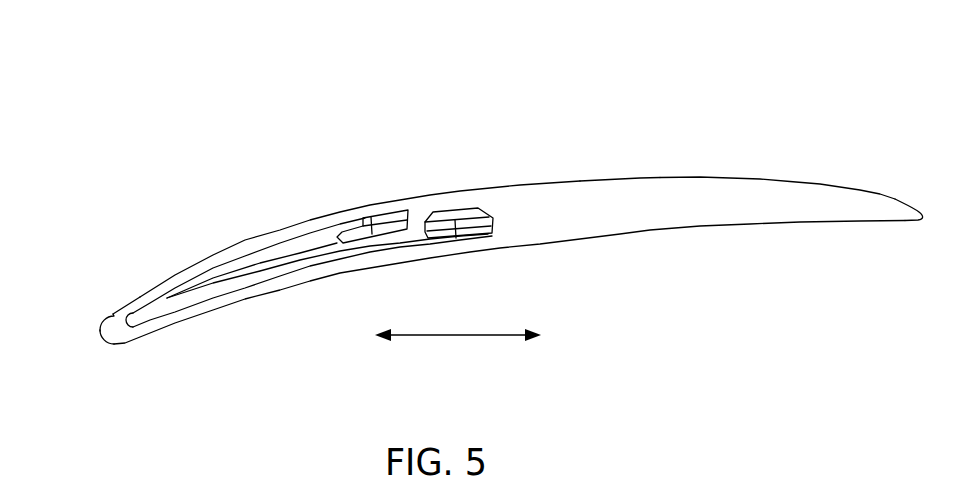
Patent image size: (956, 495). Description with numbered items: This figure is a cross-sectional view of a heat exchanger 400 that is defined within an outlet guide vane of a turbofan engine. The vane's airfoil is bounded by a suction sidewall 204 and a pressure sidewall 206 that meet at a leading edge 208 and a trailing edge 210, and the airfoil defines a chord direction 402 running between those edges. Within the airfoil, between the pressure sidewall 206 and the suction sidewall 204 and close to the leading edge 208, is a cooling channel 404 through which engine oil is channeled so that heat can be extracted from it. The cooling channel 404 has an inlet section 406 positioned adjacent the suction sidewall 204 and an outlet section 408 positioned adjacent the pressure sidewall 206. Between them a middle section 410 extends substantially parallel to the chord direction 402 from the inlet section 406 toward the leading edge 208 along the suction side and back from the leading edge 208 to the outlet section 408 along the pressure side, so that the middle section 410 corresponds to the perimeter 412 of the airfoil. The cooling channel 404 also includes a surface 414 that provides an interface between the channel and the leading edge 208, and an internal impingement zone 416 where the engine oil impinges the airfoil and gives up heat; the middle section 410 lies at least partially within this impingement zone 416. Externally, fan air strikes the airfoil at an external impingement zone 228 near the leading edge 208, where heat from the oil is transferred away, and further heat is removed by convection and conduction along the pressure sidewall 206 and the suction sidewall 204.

The heat exchanger 400 is at (838, 56).
The suction sidewall 204 is at (694, 178).
The pressure sidewall 206 is at (670, 231).
The leading edge 208 is at (105, 346).
The trailing edge 210 is at (921, 222).
The impingement zone 228 is at (82, 330).
The chord direction 402 is at (462, 343).
The cooling channel 404 is at (246, 258).
The inlet section 406 is at (414, 226).
The outlet section 408 is at (481, 209).
The middle section 410 is at (138, 292).
The perimeter 412 is at (628, 178).
The surface 414 is at (136, 323).
The impingement zone 416 is at (120, 298).